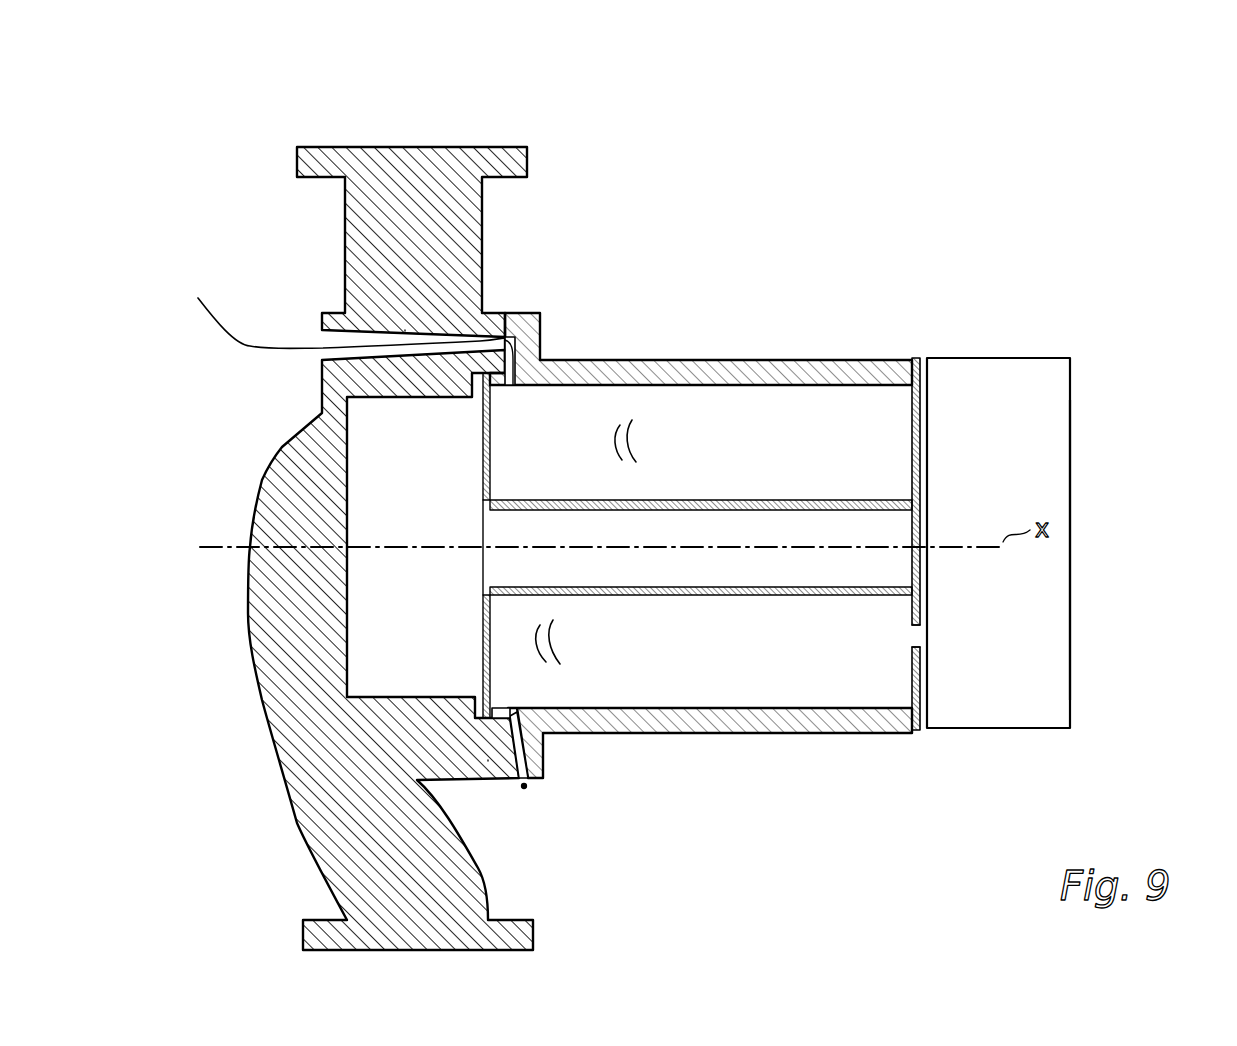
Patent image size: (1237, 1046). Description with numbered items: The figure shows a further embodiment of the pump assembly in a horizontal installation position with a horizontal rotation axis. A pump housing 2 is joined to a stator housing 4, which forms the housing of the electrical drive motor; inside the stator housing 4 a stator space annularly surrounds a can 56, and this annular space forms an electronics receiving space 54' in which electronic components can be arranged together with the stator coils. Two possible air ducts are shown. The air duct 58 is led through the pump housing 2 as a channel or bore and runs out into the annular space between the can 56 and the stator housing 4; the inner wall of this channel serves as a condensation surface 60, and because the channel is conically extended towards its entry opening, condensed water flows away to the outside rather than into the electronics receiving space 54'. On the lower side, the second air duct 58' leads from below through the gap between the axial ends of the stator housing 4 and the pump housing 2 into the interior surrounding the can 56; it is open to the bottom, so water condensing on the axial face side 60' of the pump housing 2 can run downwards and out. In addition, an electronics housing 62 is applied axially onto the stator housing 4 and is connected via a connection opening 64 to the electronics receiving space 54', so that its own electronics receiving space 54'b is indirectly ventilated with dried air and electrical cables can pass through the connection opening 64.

The pump housing 2 is at (538, 135).
The stator housing 4 is at (762, 345).
The electronics receiving space 54' is at (701, 442).
The electronics receiving space 54'b is at (998, 543).
The can 56 is at (883, 498).
The air duct 58 is at (377, 229).
The air duct 58' is at (621, 795).
The condensation surface 60 is at (498, 272).
The axial face side 60' is at (522, 831).
The electronics housing 62 is at (1072, 640).
The connection opening 64 is at (905, 641).